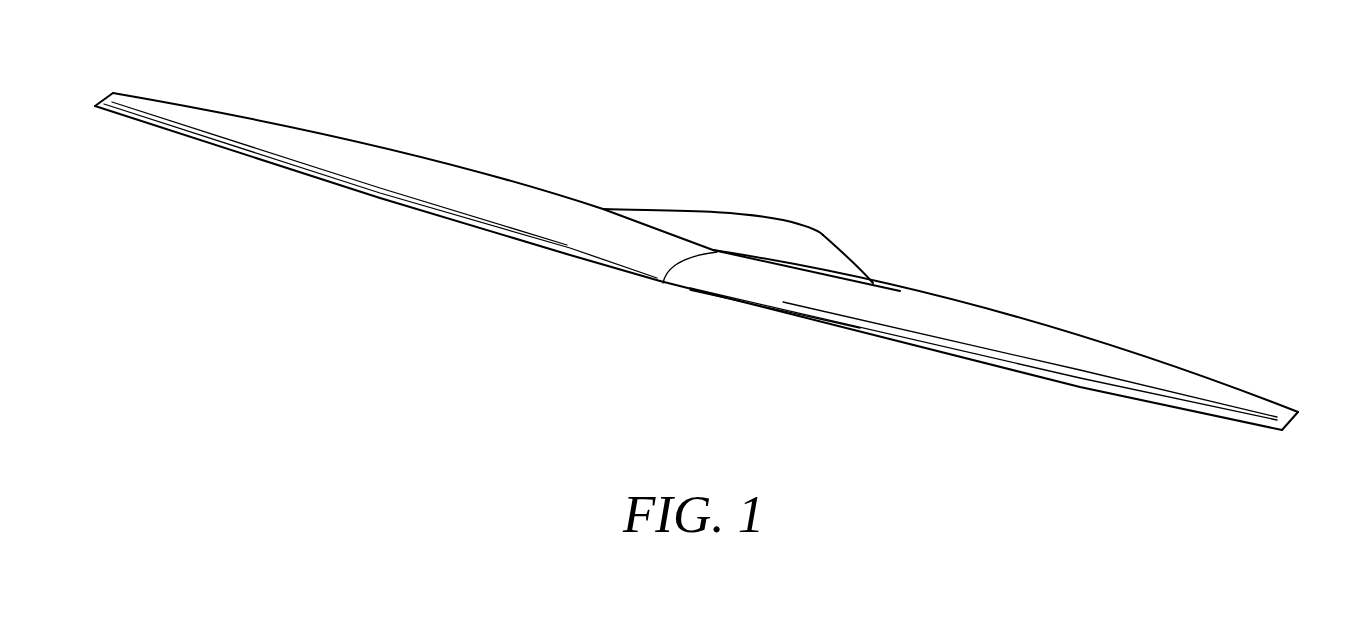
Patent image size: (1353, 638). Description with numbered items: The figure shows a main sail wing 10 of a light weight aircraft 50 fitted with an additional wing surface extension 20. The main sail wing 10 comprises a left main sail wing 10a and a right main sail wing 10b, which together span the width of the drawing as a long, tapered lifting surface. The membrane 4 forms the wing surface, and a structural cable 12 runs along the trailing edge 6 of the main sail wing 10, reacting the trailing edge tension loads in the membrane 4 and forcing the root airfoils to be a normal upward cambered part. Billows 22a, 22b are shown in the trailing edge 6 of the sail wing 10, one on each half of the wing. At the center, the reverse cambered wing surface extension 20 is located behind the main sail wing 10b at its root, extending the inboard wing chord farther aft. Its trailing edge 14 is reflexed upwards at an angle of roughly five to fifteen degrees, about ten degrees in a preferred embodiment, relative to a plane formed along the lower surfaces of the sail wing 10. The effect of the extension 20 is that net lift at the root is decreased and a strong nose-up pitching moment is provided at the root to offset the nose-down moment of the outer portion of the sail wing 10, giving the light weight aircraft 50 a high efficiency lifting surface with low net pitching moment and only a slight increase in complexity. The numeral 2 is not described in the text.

The trailing edge strip 2 is at (432, 213).
The membrane 4 is at (1110, 372).
The trailing edge 6 is at (475, 167).
The main sail wing 10 is at (243, 362).
The left main sail wing 10a is at (1253, 362).
The right main sail wing 10b is at (256, 191).
The structural cable 12 is at (627, 215).
The trailing edge of wing surface extension 14 is at (815, 228).
The wing surface extension 20 is at (738, 225).
The billow 22a is at (1028, 333).
The billow 22b is at (408, 167).
The light weight aircraft 50 is at (377, 472).